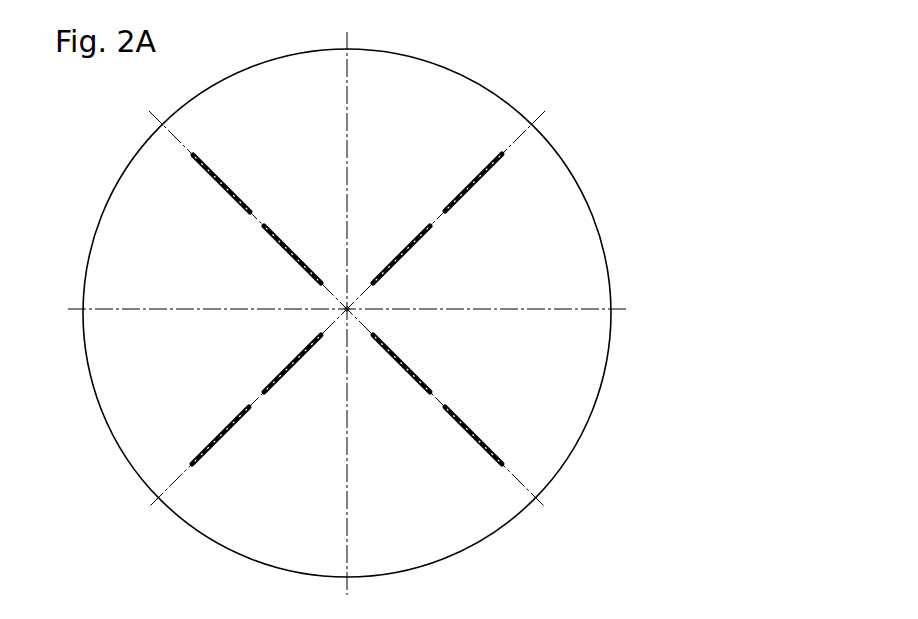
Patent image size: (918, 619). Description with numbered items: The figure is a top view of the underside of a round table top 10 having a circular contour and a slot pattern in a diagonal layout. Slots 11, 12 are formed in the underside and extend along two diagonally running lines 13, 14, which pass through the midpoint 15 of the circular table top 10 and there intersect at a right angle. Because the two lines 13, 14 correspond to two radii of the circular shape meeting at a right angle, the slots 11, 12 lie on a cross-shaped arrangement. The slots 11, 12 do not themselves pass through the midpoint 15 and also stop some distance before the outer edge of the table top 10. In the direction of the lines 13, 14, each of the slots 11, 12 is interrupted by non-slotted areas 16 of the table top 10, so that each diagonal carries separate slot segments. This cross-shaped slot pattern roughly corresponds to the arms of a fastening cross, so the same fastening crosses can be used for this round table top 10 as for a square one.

The table top 10 is at (413, 78).
The slot 11 is at (502, 155).
The slot 12 is at (223, 182).
The line 13 is at (437, 220).
The line 14 is at (335, 295).
The midpoint 15 is at (349, 308).
The non-slotted area 16 is at (438, 398).